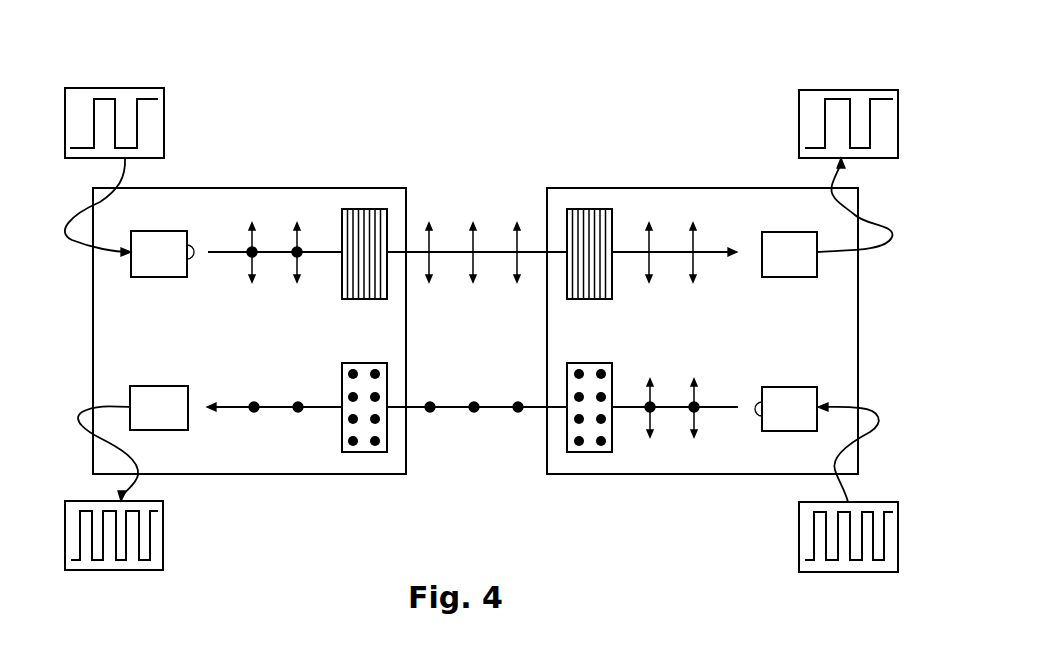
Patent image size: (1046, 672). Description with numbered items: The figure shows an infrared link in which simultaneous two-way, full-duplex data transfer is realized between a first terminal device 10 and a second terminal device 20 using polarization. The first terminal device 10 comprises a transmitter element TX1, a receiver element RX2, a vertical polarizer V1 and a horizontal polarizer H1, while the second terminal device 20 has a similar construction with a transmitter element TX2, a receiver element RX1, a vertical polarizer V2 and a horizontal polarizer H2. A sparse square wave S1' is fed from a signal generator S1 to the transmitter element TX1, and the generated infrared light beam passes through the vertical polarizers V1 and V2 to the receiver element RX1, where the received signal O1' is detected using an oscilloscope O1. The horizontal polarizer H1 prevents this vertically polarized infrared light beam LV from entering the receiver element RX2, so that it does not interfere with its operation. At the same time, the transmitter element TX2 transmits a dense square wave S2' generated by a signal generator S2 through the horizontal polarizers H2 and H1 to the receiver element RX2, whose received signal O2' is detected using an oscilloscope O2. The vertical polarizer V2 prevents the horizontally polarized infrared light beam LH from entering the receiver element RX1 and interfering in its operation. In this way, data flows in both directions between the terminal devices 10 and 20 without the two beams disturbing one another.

The first terminal device 10 is at (287, 188).
The second terminal device 20 is at (683, 188).
The transmitter element TX1 is at (162, 254).
The receiver element RX1 is at (789, 254).
The receiver element RX2 is at (159, 408).
The transmitter element TX2 is at (786, 409).
The sparse square wave S1' is at (114, 88).
The signal generator S1 is at (159, 123).
The vertical polarizer V1 is at (366, 209).
The vertically polarized infrared light beam LV is at (450, 252).
The vertical polarizer V2 is at (590, 209).
The oscilloscope O1 is at (810, 124).
The received signal O1' is at (849, 80).
The horizontal polarizer H1 is at (367, 455).
The horizontally polarized infrared light beam LH is at (450, 408).
The horizontal polarizer H2 is at (593, 455).
The oscilloscope O2 is at (165, 535).
The received signal O2' is at (114, 575).
The signal generator S2 is at (807, 537).
The dense square wave S2' is at (849, 583).